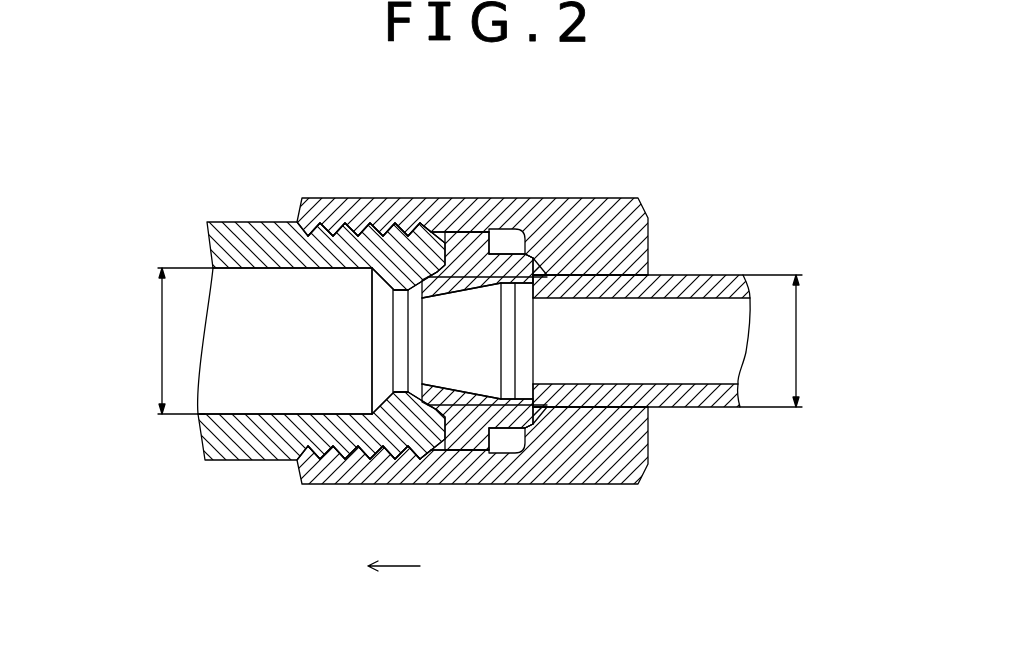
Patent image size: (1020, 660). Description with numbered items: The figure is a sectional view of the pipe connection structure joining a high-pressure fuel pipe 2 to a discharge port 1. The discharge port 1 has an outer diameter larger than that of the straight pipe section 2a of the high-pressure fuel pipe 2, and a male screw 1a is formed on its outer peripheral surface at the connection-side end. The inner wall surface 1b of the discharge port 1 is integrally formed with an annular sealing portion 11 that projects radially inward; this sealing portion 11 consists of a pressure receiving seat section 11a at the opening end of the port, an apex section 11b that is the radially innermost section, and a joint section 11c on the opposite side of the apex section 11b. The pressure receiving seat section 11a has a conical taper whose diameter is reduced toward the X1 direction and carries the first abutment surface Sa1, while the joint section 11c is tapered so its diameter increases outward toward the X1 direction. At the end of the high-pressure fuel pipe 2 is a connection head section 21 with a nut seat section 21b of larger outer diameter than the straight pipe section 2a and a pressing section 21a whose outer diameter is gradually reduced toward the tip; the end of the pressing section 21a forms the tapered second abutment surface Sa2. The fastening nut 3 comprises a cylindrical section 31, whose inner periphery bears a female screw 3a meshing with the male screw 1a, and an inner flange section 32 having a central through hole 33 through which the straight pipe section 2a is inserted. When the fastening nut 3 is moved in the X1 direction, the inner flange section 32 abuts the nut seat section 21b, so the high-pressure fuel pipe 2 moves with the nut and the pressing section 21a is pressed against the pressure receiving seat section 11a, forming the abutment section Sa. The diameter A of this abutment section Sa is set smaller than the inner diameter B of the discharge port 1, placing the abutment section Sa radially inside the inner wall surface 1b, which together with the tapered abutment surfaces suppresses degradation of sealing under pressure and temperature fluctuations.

The discharge port 1 is at (227, 200).
The male screw 1a is at (358, 224).
The inner wall surface 1b is at (260, 268).
The sealing portion 11 is at (400, 278).
The pressure receiving seat section 11a is at (403, 414).
The apex section 11b is at (403, 392).
The joint section 11c is at (371, 398).
The high-pressure fuel pipe 2 is at (725, 250).
The straight pipe section 2a is at (675, 274).
The connection head section 21 is at (472, 250).
The pressing section 21a is at (473, 414).
The nut seat section 21b is at (533, 266).
The fastening nut 3 is at (560, 185).
The female screw 3a is at (390, 228).
The cylindrical section 31 is at (328, 218).
The inner flange section 32 is at (590, 262).
The through hole 33 is at (633, 274).
The abutment section Sa is at (478, 250).
The first abutment surface Sa1 is at (440, 381).
The second abutment surface Sa2 is at (425, 414).
The diameter of the abutment section A is at (771, 341).
The inner diameter of the discharge port B is at (171, 341).
The X1 direction X1 is at (378, 567).